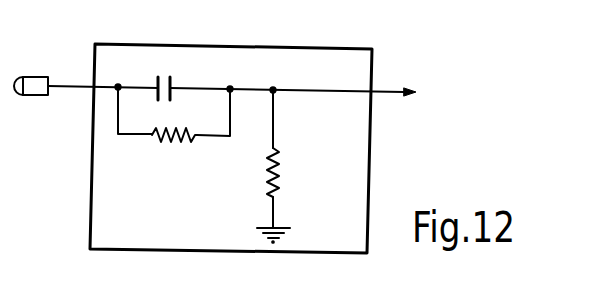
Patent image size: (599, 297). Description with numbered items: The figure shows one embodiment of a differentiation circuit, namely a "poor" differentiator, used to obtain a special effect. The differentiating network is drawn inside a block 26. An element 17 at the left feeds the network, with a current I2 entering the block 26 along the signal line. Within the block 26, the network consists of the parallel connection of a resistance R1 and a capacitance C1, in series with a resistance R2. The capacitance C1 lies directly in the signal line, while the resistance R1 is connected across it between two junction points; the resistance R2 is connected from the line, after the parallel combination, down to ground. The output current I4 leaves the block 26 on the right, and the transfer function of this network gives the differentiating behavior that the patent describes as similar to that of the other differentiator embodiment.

The light source / lamp 17 is at (38, 82).
The circuit block 26 is at (124, 43).
The input current I2 is at (71, 85).
The output current I4 is at (388, 91).
The capacitance C1 is at (158, 76).
The resistance R1 is at (175, 142).
The resistance R2 is at (284, 173).